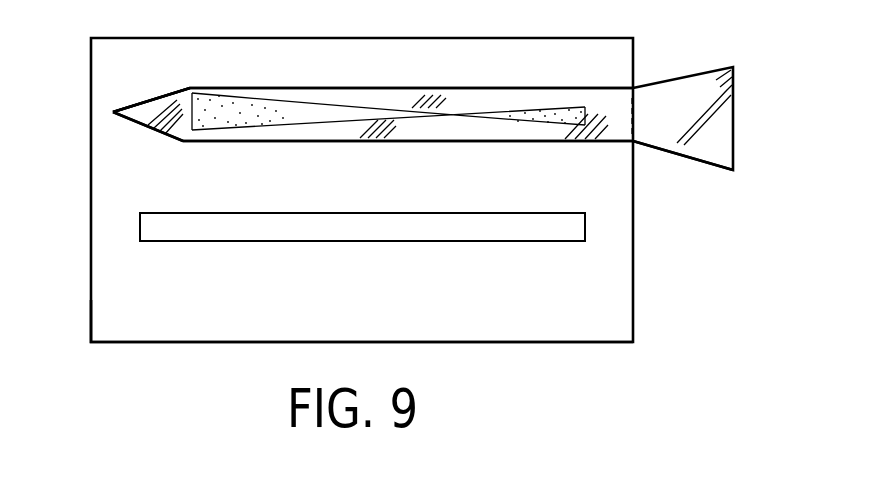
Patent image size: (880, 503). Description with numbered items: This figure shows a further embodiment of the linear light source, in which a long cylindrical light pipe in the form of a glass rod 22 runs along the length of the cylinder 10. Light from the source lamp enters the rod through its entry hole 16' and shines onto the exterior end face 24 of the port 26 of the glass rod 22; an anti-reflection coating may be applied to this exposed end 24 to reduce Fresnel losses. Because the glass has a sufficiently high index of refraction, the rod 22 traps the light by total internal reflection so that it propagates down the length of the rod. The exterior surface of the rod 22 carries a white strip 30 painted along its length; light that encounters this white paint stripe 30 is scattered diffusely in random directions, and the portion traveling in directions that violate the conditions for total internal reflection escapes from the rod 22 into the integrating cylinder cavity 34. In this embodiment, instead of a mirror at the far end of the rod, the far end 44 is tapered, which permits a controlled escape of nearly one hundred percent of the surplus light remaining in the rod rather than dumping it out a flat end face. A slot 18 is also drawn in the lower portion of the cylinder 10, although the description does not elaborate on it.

The cylinder 10 is at (91, 62).
The entry hole 16' is at (666, 83).
The slot 18 is at (443, 228).
The glass rod 22 is at (430, 141).
The exterior end face 24 is at (735, 117).
The port 26 is at (695, 152).
The white strip 30 is at (240, 118).
The integrating cylinder cavity 34 is at (130, 293).
The tapered end 44 is at (164, 98).